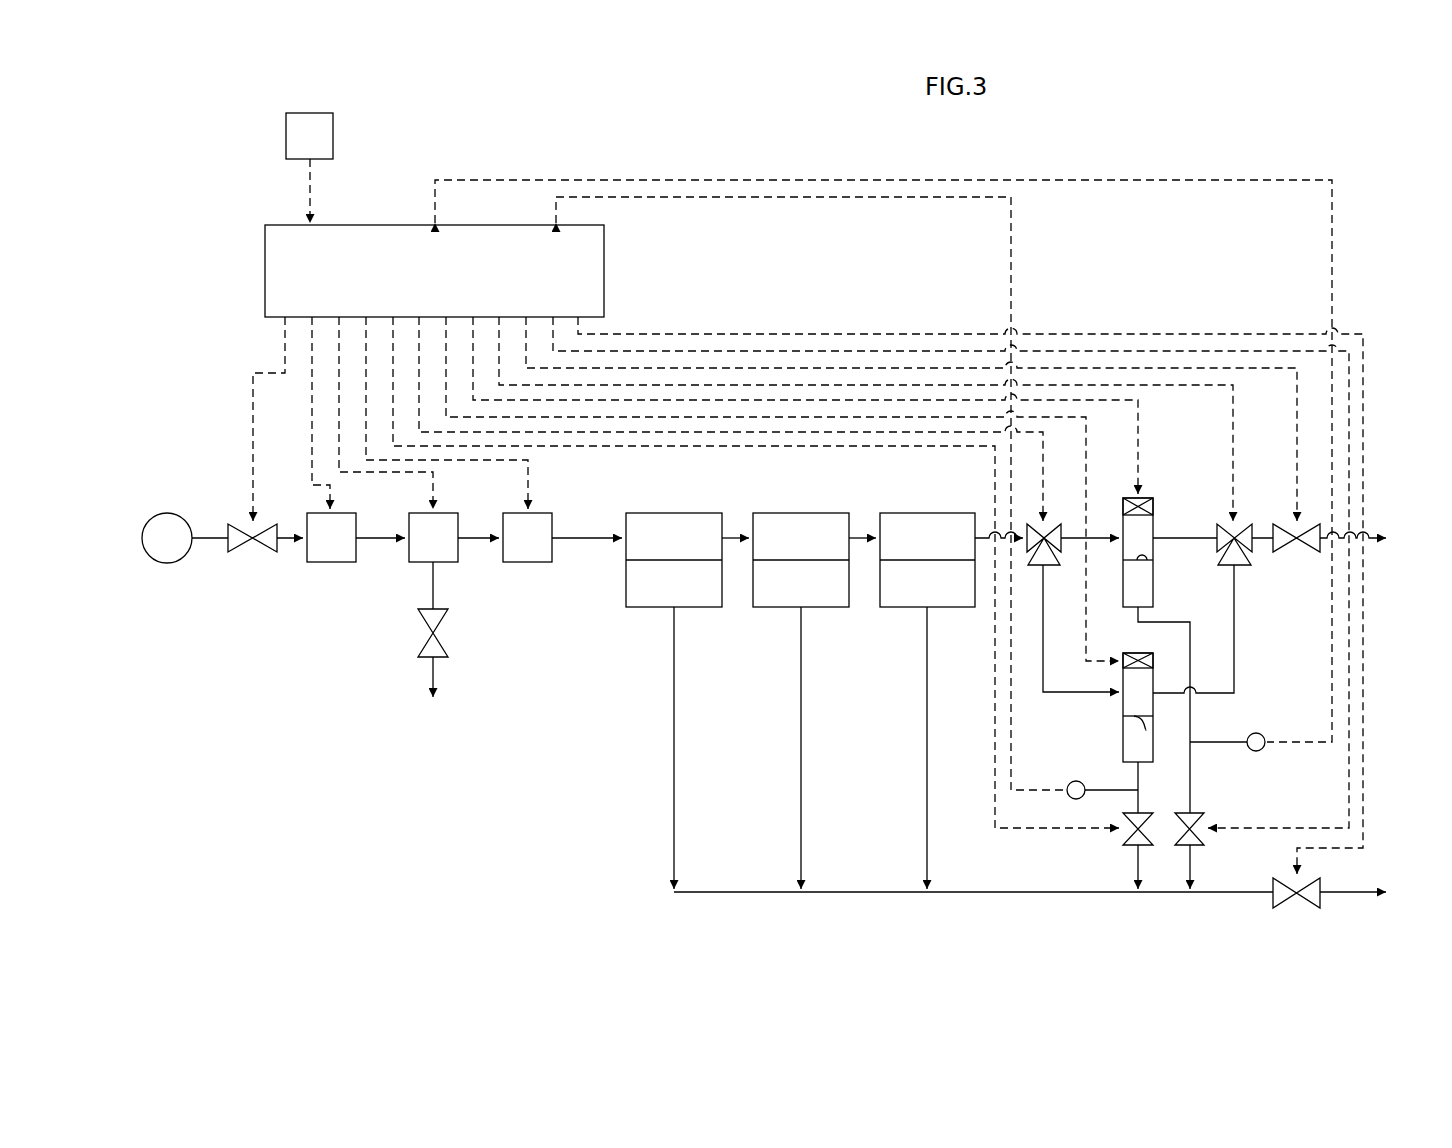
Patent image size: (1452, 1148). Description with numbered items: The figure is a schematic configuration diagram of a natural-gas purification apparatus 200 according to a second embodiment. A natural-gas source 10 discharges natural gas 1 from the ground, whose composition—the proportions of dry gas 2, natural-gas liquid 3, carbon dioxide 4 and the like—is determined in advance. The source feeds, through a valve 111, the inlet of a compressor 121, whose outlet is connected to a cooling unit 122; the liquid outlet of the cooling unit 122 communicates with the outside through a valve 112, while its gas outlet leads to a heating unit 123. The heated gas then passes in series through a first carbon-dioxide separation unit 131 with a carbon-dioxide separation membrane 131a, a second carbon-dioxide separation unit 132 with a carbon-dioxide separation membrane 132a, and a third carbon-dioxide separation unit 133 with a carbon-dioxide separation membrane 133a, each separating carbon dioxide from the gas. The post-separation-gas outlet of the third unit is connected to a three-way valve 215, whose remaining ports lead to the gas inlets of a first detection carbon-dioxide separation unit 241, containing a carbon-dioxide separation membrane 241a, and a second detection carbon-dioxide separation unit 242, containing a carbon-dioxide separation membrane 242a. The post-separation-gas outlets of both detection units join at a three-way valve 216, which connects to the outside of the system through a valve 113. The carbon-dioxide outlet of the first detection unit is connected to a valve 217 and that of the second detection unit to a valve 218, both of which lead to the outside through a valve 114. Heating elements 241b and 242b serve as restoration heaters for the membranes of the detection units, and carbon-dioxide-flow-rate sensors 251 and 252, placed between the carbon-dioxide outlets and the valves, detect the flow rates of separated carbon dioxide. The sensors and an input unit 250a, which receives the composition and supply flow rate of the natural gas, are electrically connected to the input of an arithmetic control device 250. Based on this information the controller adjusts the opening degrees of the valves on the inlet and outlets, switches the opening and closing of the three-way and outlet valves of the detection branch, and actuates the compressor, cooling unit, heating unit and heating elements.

The natural gas 1 is at (166, 528).
The dry gas 2 is at (1404, 514).
The natural-gas liquid 3 is at (613, 558).
The carbon dioxide 4 is at (683, 775).
The natural-gas source 10 is at (170, 563).
The valve 111 is at (262, 555).
The valve 112 is at (448, 652).
The valve 113 is at (1300, 555).
The valve 114 is at (1316, 905).
The compressor 121 is at (331, 565).
The cooling unit 122 is at (458, 553).
The heating unit 123 is at (548, 513).
The first carbon-dioxide separation unit 131 is at (650, 610).
The carbon-dioxide separation membrane 131a is at (690, 560).
The second carbon-dioxide separation unit 132 is at (772, 610).
The carbon-dioxide separation membrane 132a is at (816, 560).
The third carbon-dioxide separation unit 133 is at (898, 610).
The carbon-dioxide separation membrane 133a is at (943, 560).
The natural-gas purification apparatus 200 is at (748, 164).
The three-way valve 215 is at (1046, 525).
The three-way valve 216 is at (1255, 567).
The valve 217 is at (1200, 848).
The valve 218 is at (1125, 848).
The first detection carbon-dioxide separation unit 241 is at (1153, 527).
The carbon-dioxide separation membrane 241a is at (1148, 563).
The heating element 241b is at (1140, 494).
The second detection carbon-dioxide separation unit 242 is at (1123, 705).
The carbon-dioxide separation membrane 242a is at (1130, 734).
The heating element 242b is at (1122, 657).
The arithmetic control device 250 is at (604, 247).
The input unit 250a is at (333, 126).
The carbon-dioxide-flow-rate sensor 251 is at (1258, 751).
The carbon-dioxide-flow-rate sensor 252 is at (1072, 800).